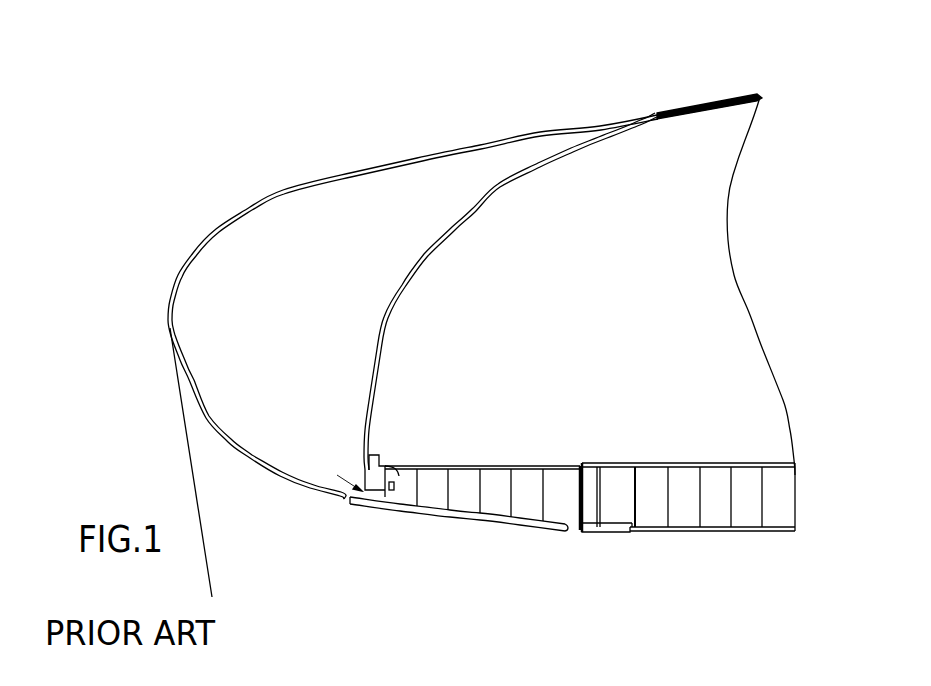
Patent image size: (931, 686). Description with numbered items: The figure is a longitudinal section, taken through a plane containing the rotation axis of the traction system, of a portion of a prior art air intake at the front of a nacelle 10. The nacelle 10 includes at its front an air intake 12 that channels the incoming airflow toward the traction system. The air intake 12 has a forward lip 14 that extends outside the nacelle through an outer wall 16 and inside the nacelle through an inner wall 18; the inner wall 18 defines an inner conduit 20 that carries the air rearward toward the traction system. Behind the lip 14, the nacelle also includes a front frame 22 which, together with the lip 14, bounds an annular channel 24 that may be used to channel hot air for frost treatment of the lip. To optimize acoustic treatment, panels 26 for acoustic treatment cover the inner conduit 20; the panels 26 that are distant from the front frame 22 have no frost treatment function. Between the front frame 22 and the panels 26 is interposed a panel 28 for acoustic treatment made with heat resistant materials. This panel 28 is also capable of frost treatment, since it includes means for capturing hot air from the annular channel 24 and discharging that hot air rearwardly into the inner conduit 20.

The nacelle 10 is at (232, 165).
The air intake 12 is at (165, 448).
The lip 14 is at (179, 273).
The outer wall 16 is at (713, 100).
The inner wall 18 is at (703, 532).
The inner conduit 20 is at (573, 532).
The front frame 22 is at (427, 257).
The annular channel 24 is at (292, 295).
The panels for acoustic treatment 26 is at (767, 493).
The panel for acoustic treatment with heat resistant materials 28 is at (505, 503).